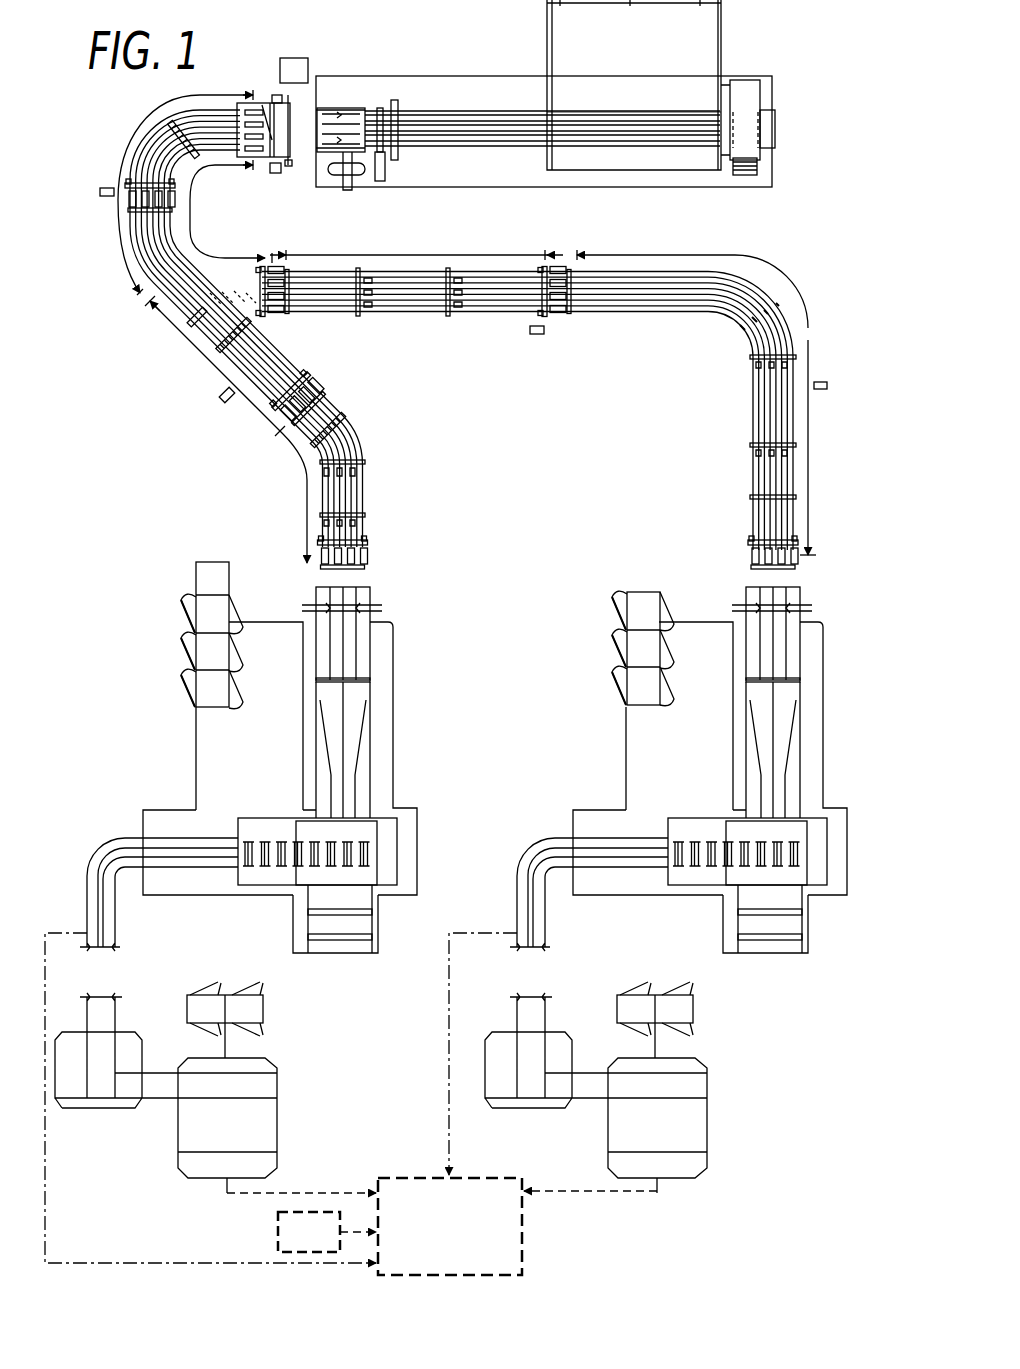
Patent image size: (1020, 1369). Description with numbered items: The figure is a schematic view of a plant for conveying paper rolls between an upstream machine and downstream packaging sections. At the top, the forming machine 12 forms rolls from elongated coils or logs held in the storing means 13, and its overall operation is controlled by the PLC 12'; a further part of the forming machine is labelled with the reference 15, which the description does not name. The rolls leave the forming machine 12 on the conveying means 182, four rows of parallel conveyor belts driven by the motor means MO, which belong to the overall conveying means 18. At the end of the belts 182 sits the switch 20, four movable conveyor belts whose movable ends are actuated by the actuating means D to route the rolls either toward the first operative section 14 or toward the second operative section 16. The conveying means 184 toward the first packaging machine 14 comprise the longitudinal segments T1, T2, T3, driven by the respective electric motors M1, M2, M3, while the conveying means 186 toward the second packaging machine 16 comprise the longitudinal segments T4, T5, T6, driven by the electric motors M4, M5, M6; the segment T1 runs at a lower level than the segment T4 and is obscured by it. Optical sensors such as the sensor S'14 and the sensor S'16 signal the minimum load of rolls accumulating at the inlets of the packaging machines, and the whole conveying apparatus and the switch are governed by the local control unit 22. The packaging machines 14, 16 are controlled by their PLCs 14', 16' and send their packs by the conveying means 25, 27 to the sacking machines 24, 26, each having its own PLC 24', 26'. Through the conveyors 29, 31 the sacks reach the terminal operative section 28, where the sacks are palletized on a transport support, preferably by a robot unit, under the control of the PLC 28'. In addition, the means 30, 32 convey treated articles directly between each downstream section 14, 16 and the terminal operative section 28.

The forming machine 12 is at (545, 99).
The conveying means 182 is at (457, 102).
The means for storing the elongated coils 13 is at (680, 42).
The extruded strands 15 is at (623, 152).
The switch 20 is at (262, 94).
The motor means MO is at (276, 95).
The PLC 12' is at (317, 45).
The means for actuating the switch D is at (279, 175).
The conveying means 18 is at (175, 315).
The longitudinal segment T1 is at (130, 145).
The electric motor M1 is at (178, 198).
The longitudinal segment T4 is at (192, 226).
The longitudinal segment T2 is at (183, 333).
The conveying means 184 is at (208, 349).
The sensor S'14 is at (192, 421).
The electric motor M2 is at (330, 408).
The longitudinal segment T3 is at (306, 470).
The electric motor M3 is at (370, 562).
The conveying means 186 is at (796, 338).
The longitudinal segment T5 is at (470, 255).
The electric motor M4 is at (280, 268).
The electric motor M5 is at (558, 268).
The longitudinal segment T6 is at (808, 460).
The sensor S'16 is at (848, 406).
The electric motor M6 is at (800, 567).
The first operative section 14 is at (245, 770).
The local control unit 22 is at (185, 578).
The PLC 14' is at (134, 656).
The conveying means 25 is at (77, 888).
The PLC 24' is at (282, 1020).
The sacking machine 24 is at (166, 1098).
The means for conveying the treated articles 30 is at (45, 1215).
The conveyor 29 is at (318, 1192).
The PLC 28' is at (292, 1232).
The terminal operative section 28 is at (450, 1226).
The second operative section 16 is at (726, 770).
The PLC 16' is at (598, 648).
The conveying means 27 is at (508, 888).
The PLC 26' is at (724, 1019).
The sacking machine 26 is at (661, 1093).
The means for conveying the treated articles 32 is at (449, 1052).
The conveyor 31 is at (572, 1193).